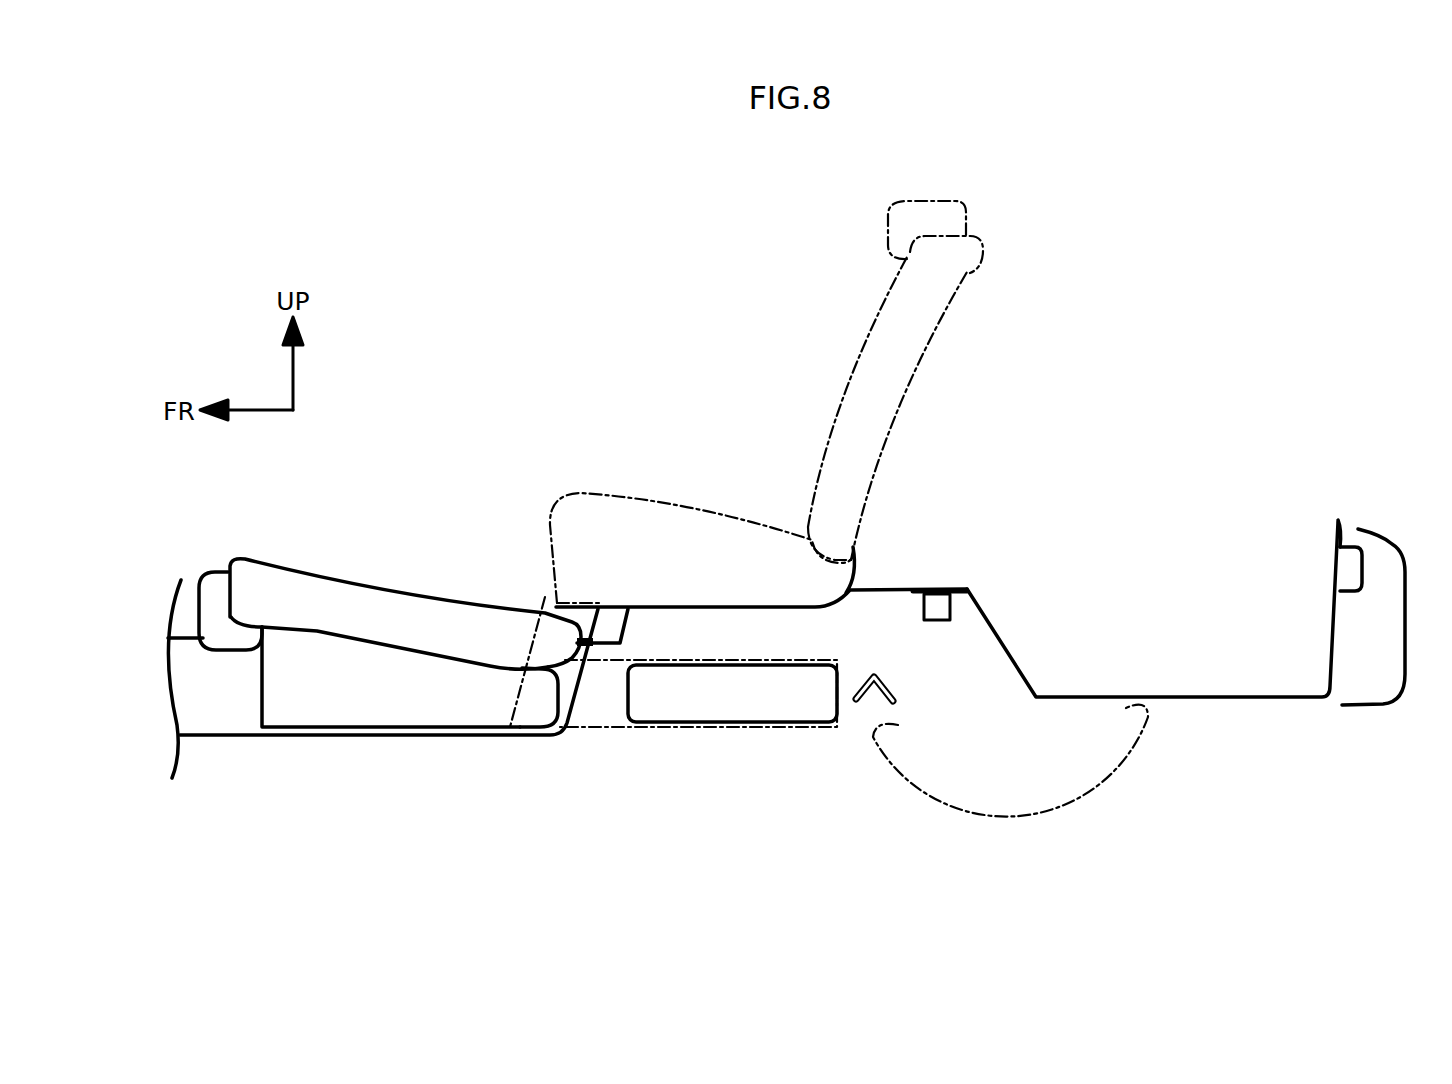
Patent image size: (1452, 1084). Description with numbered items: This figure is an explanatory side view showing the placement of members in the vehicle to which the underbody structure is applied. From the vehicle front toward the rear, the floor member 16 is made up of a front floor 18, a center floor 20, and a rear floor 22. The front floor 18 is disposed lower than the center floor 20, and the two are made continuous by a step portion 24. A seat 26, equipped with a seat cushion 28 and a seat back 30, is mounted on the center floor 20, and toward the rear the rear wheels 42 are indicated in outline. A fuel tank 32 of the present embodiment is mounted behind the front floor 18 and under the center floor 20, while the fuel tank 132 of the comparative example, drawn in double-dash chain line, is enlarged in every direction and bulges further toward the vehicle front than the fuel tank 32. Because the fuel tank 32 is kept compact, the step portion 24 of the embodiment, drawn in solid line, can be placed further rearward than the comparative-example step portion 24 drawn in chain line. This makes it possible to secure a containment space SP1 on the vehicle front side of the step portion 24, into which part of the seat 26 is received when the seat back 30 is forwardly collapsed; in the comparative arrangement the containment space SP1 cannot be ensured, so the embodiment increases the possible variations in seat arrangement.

The floor member 16 is at (786, 627).
The front floor 18 is at (313, 737).
The center floor 20 is at (669, 608).
The rear floor 22 is at (1218, 697).
The step portion 24 is at (543, 606).
The seat 26 is at (241, 553).
The seat cushion 28 is at (697, 507).
The seat back 30 is at (372, 588).
The fuel tank 32 is at (628, 701).
The rear wheels 42 is at (938, 801).
The fuel tank of the comparative example 132 is at (582, 742).
The containment space SP1 is at (526, 736).